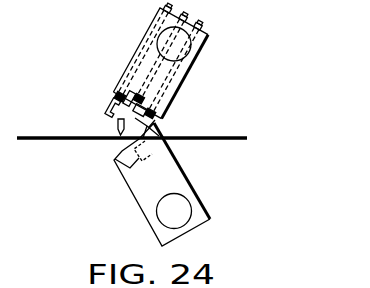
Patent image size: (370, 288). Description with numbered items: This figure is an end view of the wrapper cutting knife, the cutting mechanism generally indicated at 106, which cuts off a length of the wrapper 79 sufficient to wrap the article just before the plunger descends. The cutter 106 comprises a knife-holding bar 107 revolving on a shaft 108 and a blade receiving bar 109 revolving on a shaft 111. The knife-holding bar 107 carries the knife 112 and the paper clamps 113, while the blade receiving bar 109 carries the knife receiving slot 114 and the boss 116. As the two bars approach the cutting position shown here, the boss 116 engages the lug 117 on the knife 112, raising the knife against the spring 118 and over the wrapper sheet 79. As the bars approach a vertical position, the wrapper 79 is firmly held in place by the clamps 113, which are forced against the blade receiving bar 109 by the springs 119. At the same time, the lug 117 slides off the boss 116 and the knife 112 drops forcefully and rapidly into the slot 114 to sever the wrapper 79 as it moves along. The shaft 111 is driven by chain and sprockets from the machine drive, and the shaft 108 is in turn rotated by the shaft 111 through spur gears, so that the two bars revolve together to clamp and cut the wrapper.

The wrapper 79 is at (222, 138).
The cutting mechanism 106 is at (210, 108).
The knife-holding bar 107 is at (180, 75).
The shaft 108 is at (182, 44).
The blade receiving bar 109 is at (177, 186).
The shaft 111 is at (180, 206).
The knife 112 is at (115, 121).
The paper clamps 113 is at (109, 101).
The knife receiving slot 114 is at (128, 147).
The boss 116 is at (153, 121).
The lug 117 is at (151, 111).
The spring 118 is at (132, 92).
The springs 119 is at (118, 93).